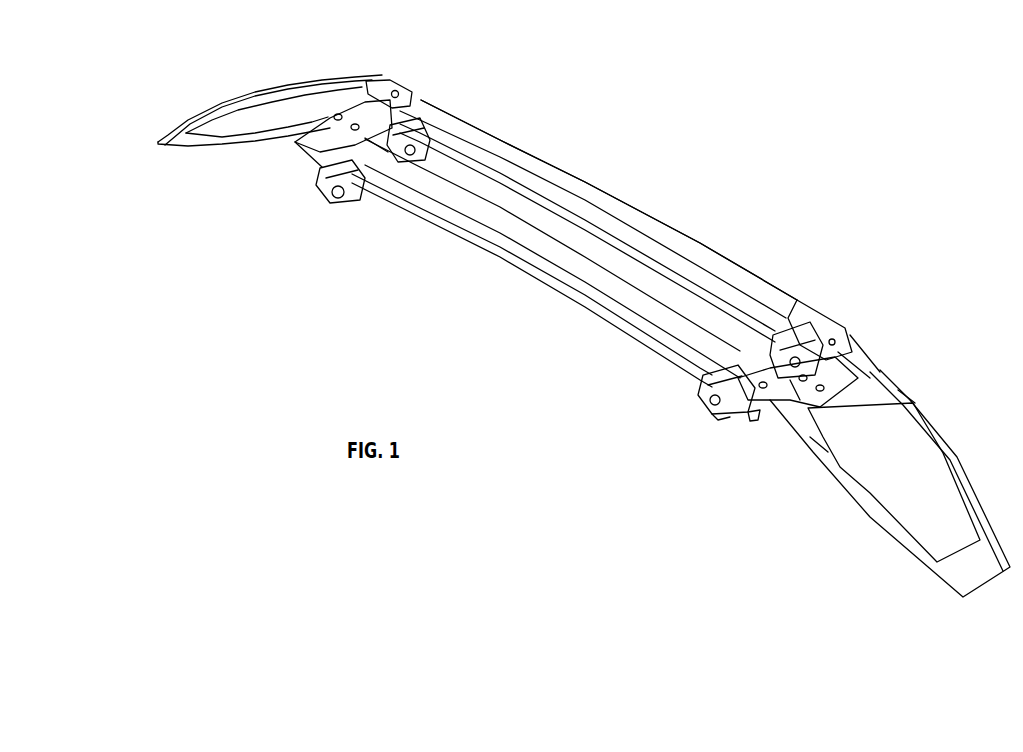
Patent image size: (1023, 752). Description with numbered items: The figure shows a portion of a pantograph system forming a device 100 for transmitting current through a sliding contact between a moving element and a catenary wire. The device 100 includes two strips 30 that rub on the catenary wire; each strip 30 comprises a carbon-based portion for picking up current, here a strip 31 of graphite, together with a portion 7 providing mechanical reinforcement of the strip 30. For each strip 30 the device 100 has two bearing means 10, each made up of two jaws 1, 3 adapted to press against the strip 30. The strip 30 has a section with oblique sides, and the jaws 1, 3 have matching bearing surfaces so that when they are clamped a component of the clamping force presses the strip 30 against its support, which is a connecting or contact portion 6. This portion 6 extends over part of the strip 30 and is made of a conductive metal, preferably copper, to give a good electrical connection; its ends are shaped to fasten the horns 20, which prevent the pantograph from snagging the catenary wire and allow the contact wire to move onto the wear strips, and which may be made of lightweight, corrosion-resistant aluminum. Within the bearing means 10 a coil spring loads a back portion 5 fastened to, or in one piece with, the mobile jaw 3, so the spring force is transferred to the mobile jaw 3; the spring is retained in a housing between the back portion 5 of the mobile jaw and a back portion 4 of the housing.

The device for transmission of current 100 is at (812, 106).
The jaw 1 is at (793, 330).
The mobile jaw 3 is at (727, 385).
The back portion of the housing 4 is at (717, 410).
The back portion of the mobile jaw 5 is at (777, 355).
The connecting or contact portion 6 is at (757, 414).
The mechanical reinforcement portion 7 is at (627, 200).
The bearing means 10 is at (330, 207).
The horn 20 is at (887, 380).
The strip 30 is at (517, 137).
The strip of graphite 31 is at (443, 112).